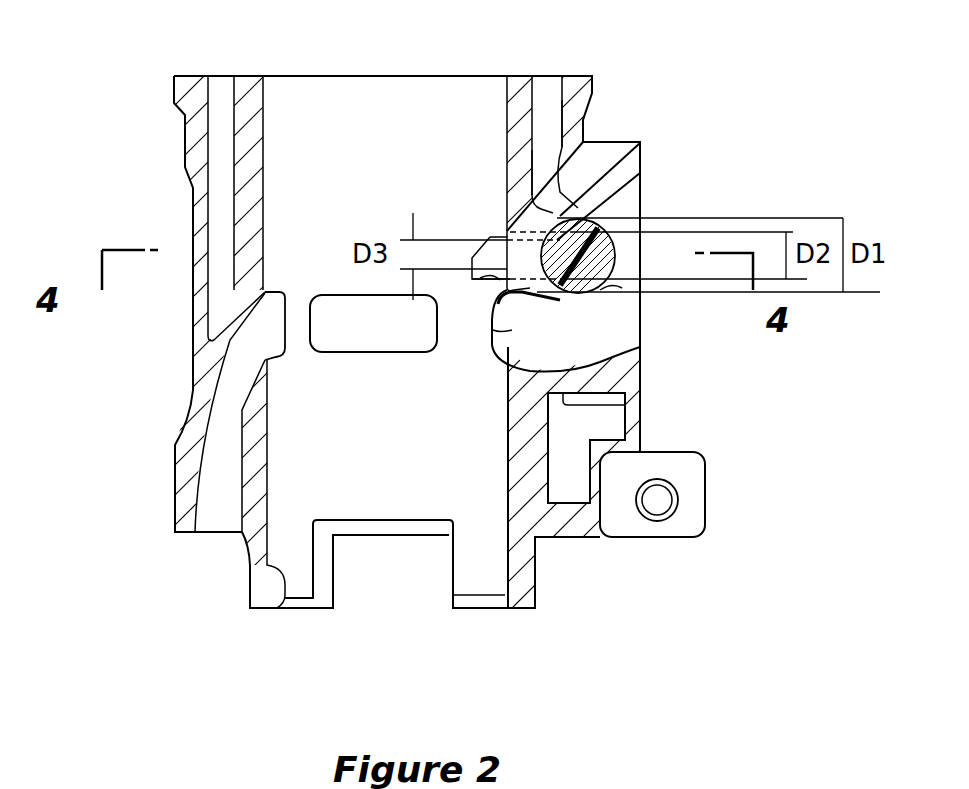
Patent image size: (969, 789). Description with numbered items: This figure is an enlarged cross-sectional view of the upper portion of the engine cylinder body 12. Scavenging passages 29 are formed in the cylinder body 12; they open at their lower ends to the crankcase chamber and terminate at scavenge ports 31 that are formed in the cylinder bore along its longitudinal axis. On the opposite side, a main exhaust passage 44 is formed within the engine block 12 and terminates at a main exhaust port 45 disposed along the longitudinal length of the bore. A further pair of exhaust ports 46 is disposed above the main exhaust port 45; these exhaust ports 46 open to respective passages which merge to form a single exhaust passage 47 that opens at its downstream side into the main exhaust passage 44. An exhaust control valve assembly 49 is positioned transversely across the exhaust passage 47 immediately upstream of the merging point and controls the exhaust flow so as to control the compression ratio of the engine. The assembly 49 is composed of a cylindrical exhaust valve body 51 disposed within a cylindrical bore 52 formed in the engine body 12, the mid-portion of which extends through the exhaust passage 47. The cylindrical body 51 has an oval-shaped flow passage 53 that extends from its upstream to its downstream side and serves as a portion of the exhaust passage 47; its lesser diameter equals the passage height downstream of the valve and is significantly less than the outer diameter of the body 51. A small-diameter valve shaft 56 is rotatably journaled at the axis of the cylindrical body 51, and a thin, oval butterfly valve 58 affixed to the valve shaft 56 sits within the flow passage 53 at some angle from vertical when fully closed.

The engine cylinder body 12 is at (600, 86).
The scavenging passages 29 is at (212, 452).
The scavenge ports 31 is at (277, 305).
The main exhaust passage 44 is at (640, 347).
The main exhaust port 45 is at (512, 330).
The exhaust ports 46 is at (480, 278).
The exhaust passage 47 is at (490, 237).
The exhaust control valve assembly 49 is at (553, 208).
The cylindrical exhaust valve body 51 is at (615, 250).
The cylindrical bore 52 is at (622, 288).
The flow passage 53 is at (640, 173).
The valve shaft 56 is at (591, 300).
The butterfly valve 58 is at (603, 233).